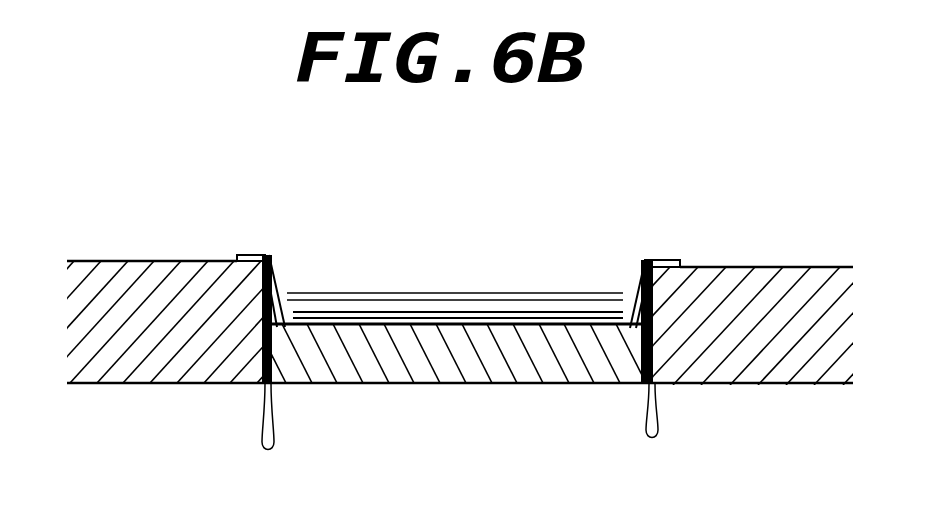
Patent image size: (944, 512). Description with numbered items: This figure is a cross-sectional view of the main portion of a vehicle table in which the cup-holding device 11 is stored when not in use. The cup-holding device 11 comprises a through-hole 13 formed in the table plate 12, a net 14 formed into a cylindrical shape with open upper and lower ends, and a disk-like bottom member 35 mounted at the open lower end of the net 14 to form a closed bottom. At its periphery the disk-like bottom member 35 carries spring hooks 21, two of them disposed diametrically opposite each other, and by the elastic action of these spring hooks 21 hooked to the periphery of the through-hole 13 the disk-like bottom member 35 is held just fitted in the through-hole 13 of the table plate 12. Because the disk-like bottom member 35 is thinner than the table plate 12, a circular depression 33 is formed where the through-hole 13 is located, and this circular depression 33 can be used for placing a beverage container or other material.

The cup-holding device 11 is at (455, 230).
The table plate 12 is at (807, 267).
The through-hole 13 is at (277, 283).
The net 14 is at (387, 298).
The spring hooks 21 is at (253, 257).
The circular depression 33 is at (453, 287).
The disk-like bottom member 35 is at (489, 380).